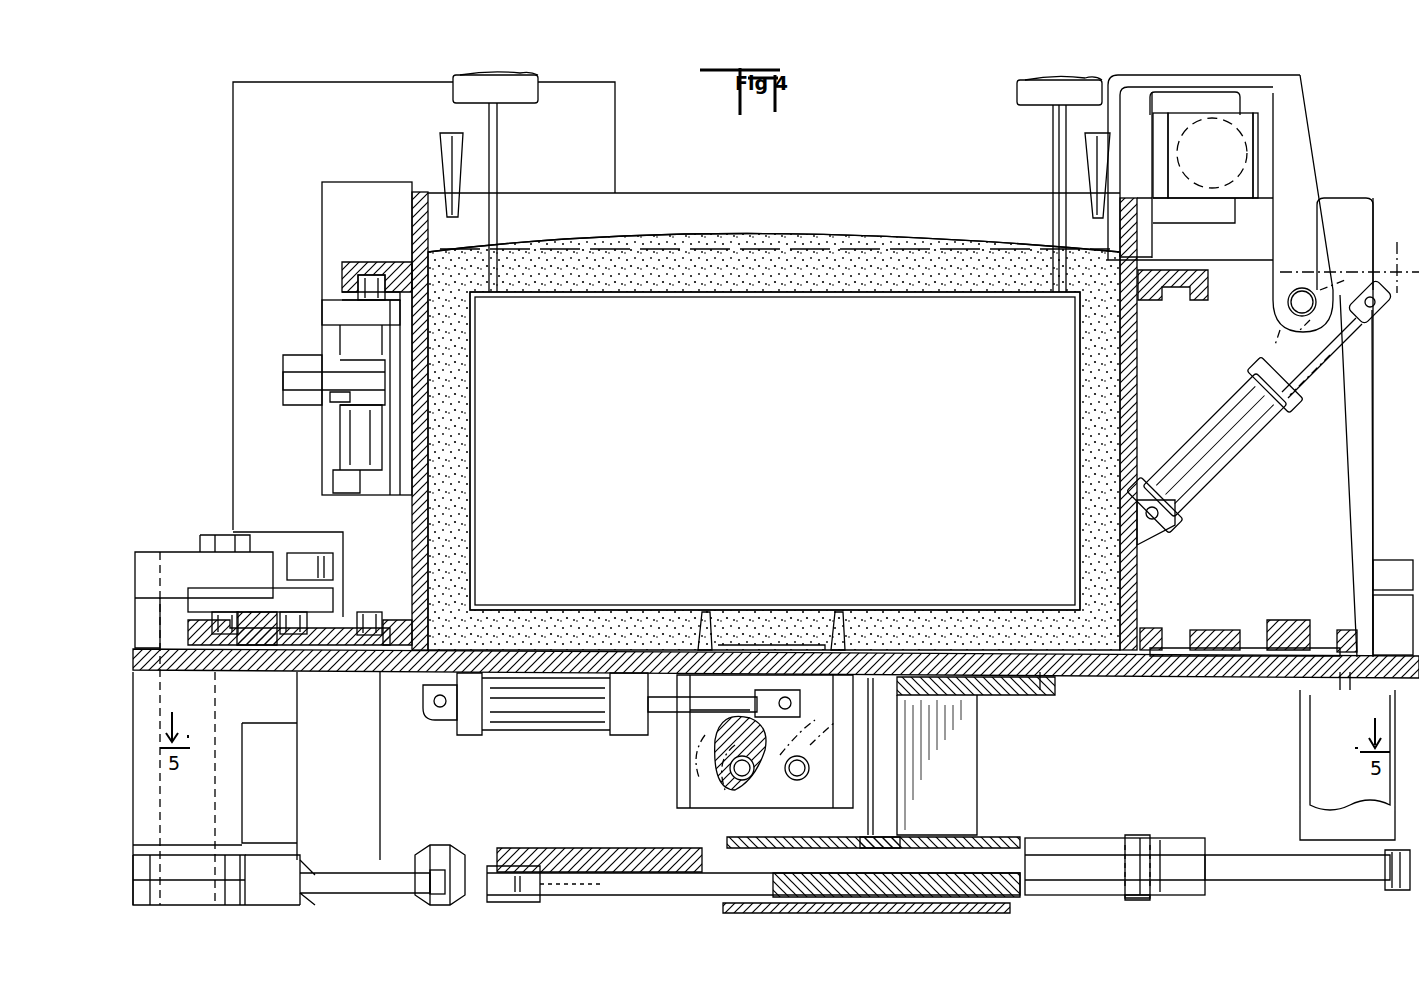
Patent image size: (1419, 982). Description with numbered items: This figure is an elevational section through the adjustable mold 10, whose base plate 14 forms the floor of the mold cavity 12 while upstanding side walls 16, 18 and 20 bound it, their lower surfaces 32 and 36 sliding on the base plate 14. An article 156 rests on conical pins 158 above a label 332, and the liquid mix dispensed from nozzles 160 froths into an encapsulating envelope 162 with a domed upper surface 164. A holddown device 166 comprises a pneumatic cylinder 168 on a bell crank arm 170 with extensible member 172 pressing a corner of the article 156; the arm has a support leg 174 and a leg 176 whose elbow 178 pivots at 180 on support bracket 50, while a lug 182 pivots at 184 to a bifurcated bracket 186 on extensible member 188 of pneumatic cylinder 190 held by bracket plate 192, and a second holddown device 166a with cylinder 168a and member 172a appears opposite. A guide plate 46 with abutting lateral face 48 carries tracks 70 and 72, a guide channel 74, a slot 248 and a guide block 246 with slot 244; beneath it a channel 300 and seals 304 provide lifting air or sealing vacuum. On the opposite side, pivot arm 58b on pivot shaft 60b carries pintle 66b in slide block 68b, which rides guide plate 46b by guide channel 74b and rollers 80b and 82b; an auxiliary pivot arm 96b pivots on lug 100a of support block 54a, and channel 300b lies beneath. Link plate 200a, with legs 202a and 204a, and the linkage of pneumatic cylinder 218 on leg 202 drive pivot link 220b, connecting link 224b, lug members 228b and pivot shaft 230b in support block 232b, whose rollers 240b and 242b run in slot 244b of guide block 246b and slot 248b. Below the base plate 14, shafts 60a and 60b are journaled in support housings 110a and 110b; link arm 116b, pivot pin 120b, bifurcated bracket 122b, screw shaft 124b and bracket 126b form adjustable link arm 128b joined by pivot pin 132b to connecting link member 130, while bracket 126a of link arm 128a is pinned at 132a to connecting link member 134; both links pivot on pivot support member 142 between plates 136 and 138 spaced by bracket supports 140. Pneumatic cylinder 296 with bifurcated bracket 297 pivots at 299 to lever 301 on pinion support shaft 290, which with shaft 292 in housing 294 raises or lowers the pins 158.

The mold 10 is at (740, 147).
The mold cavity 12 is at (672, 215).
The base plate 14 is at (975, 668).
The side wall 16 is at (1133, 405).
The side wall 18 is at (892, 193).
The side wall 20 is at (420, 500).
The lower surface 32 is at (1160, 650).
The lower surface 36 is at (405, 672).
The guide plate 46 is at (1210, 628).
The guide plate 46b is at (332, 650).
The lateral face 48 is at (1150, 628).
The support bracket 50 is at (1350, 440).
The support block 54a is at (1410, 642).
The pivot arm 58b is at (148, 553).
The pivot shaft 60a is at (1385, 885).
The pivot shaft 60b is at (176, 553).
The pintle 66b is at (210, 535).
The slide block 68b is at (330, 590).
The undercut channel segment 70 is at (1245, 635).
The undercut channel segment 72 is at (1335, 630).
The U-shaped guide channel 74 is at (1285, 618).
The U-shaped guide channel 74b is at (261, 616).
The guide roller 80b is at (308, 611).
The guide roller 82b is at (217, 611).
The auxiliary pivot arm 96b is at (300, 553).
The extending lug 100a is at (1373, 592).
The support housing 110a is at (1300, 750).
The support housing 110b is at (242, 760).
The link arm 116b is at (250, 855).
The pivot pin 120b is at (180, 855).
The bifurcated bracket 122b is at (275, 868).
The adjustable screw shaft 124b is at (370, 880).
The bifurcated bracket 126a is at (1168, 845).
The bifurcated bracket 126b is at (468, 870).
The fixed link arm 128a is at (1170, 804).
The fixed link arm 128b is at (440, 808).
The connecting link member 130 is at (905, 882).
The pivot pin 132a is at (1140, 896).
The pivot pin 132b is at (753, 884).
The connecting link member 134 is at (662, 852).
The plate member 136 is at (985, 840).
The plate member 138 is at (1010, 908).
The bracket support 140 is at (960, 748).
The pivot support member 142 is at (760, 837).
The article 156 is at (800, 416).
The pins 158 is at (706, 612).
The dispensing nozzles 160 is at (444, 160).
The encapsulating envelope 162 is at (790, 290).
The domed upper surface 164 is at (793, 236).
The holddown device 166 is at (1000, 112).
The holddown device 166a is at (590, 128).
The pneumatic cylinder 168 is at (1017, 84).
The pneumatic cylinder 168a is at (540, 78).
The bell crank arm 170 is at (1300, 80).
The extensible member 172 is at (1052, 268).
The extensible member 172a is at (498, 262).
The support leg 174 is at (1170, 77).
The leg 176 is at (1300, 200).
The elbow 178 is at (1280, 312).
The pivot 180 is at (1298, 288).
The lug 182 is at (1342, 280).
The pivot 184 is at (1378, 308).
The bifurcated bracket 186 is at (1280, 362).
The extensible member 188 is at (1290, 392).
The pneumatic cylinder 190 is at (1240, 450).
The bracket plate 192 is at (1148, 540).
The link plate 200a is at (226, 102).
The leg 202 is at (1130, 122).
The leg 202a is at (607, 160).
The leg 204a is at (248, 282).
The pneumatic cylinder 218 is at (1230, 164).
The pivot link 220b is at (288, 368).
The connecting link 224b is at (296, 382).
The lug member 228b is at (340, 400).
The pivot shaft 230b is at (350, 450).
The support block 232b is at (340, 320).
The roller 240b is at (355, 297).
The roller 242b is at (385, 615).
The slot 244 is at (1190, 292).
The slot 244b is at (370, 270).
The guide block 246 is at (1178, 268).
The guide block 246b is at (394, 255).
The slot 248 is at (1162, 636).
The slot 248b is at (412, 645).
The pinion support shaft 290 is at (731, 760).
The pinion support shaft 292 is at (804, 778).
The housing 294 is at (685, 776).
The pneumatic cylinder 296 is at (553, 715).
The bifurcated bracket 297 is at (785, 690).
The pivot 299 is at (815, 737).
The channel 300 is at (1200, 660).
The channel 300b is at (275, 650).
The lever 301 is at (700, 758).
The seals 304 is at (1145, 680).
The label 332 is at (758, 650).